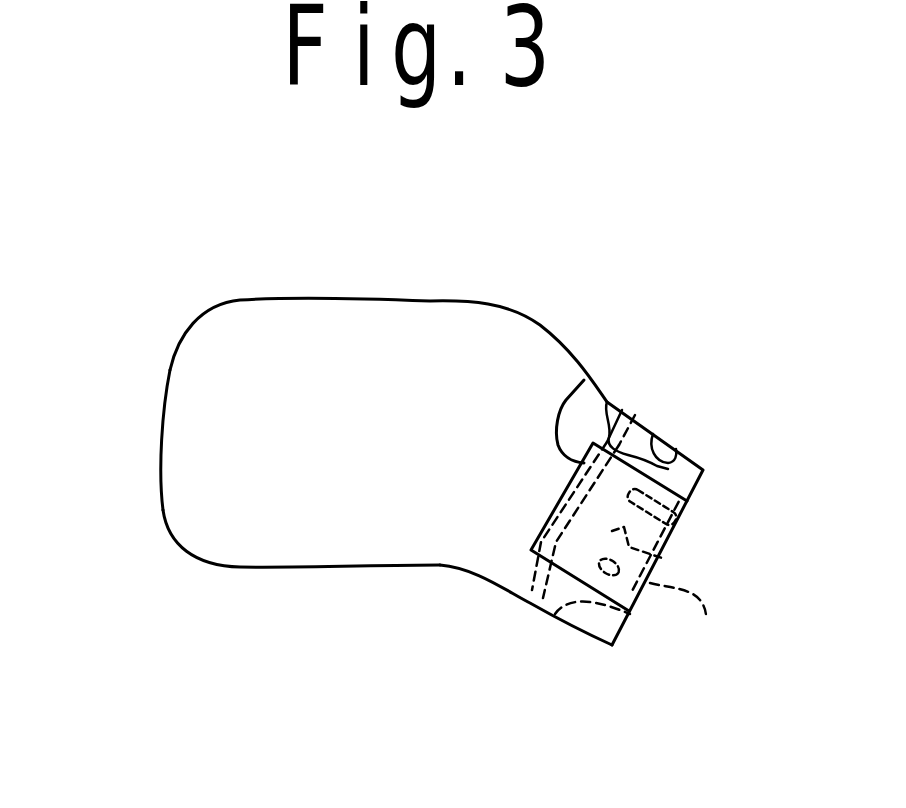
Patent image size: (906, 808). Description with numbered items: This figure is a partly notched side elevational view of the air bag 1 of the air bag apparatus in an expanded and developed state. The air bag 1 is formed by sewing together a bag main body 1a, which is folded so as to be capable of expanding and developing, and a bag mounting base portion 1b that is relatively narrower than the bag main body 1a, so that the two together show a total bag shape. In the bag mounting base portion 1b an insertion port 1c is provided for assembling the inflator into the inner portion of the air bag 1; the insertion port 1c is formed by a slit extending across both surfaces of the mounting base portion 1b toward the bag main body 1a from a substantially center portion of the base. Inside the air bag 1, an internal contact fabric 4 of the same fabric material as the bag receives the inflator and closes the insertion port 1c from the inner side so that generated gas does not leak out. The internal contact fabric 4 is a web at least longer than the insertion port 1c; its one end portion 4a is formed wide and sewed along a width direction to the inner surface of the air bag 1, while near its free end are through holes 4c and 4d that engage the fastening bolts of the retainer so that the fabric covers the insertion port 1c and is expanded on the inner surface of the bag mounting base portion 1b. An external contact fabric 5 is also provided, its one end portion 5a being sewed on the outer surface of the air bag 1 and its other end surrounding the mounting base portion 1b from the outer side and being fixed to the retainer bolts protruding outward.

The air bag 1 is at (329, 461).
The bag main body 1a is at (186, 408).
The bag mounting base portion 1b is at (582, 625).
The insertion port 1c is at (699, 627).
The internal contact fabric 4 is at (682, 468).
The one end portion 4a is at (540, 578).
The through hole 4c is at (622, 575).
The through hole 4d is at (682, 511).
The external contact fabric 5 is at (695, 547).
The one end portion 5a is at (583, 384).